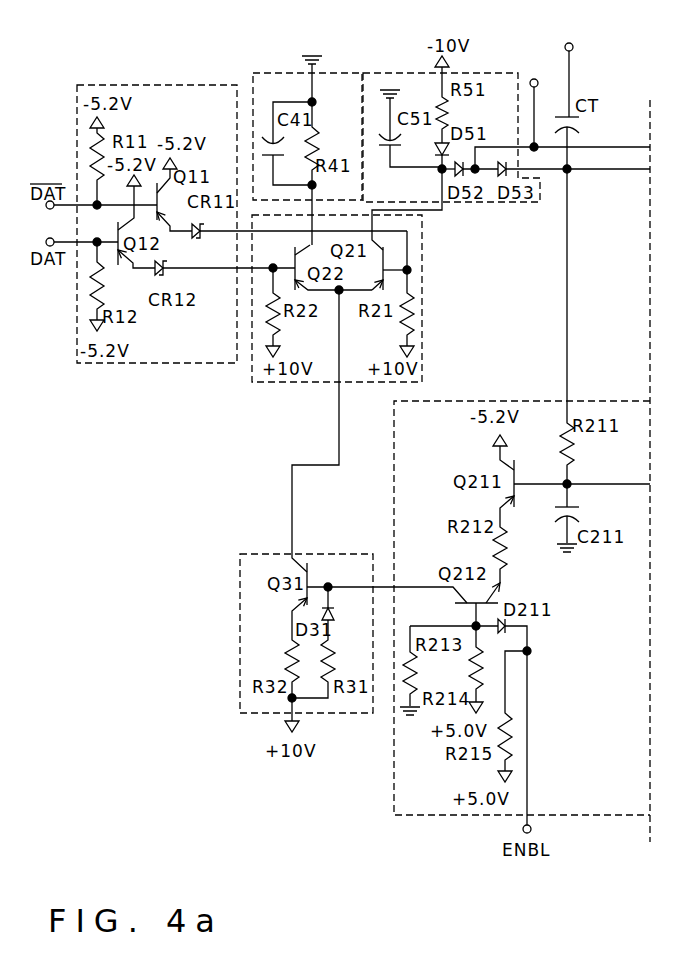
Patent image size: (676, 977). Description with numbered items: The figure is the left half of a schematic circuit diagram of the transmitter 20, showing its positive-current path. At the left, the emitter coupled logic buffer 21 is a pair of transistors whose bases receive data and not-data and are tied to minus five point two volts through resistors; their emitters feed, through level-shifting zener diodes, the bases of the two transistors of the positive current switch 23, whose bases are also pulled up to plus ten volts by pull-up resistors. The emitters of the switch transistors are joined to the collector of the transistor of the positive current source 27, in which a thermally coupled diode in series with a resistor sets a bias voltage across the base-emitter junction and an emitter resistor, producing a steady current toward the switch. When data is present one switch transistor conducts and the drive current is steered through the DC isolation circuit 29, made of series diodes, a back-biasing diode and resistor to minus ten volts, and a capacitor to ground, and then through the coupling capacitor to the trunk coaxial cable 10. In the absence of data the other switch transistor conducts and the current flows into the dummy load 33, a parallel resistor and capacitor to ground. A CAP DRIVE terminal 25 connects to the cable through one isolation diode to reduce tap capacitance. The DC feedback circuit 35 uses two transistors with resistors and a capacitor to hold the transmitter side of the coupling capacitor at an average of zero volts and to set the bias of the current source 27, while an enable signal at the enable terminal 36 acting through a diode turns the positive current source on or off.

The trunk coaxial cable 10 is at (573, 49).
The transmitter 20 is at (248, 457).
The emitter coupled logic buffer 21 is at (130, 83).
The positive current switch 23 is at (268, 383).
The CAP DRIVE terminal 25 is at (538, 84).
The positive current source 27 is at (327, 716).
The DC isolation circuit 29 is at (416, 72).
The dummy load 33 is at (290, 73).
The DC feedback circuit 35 is at (469, 398).
The enable terminal 36 is at (523, 829).